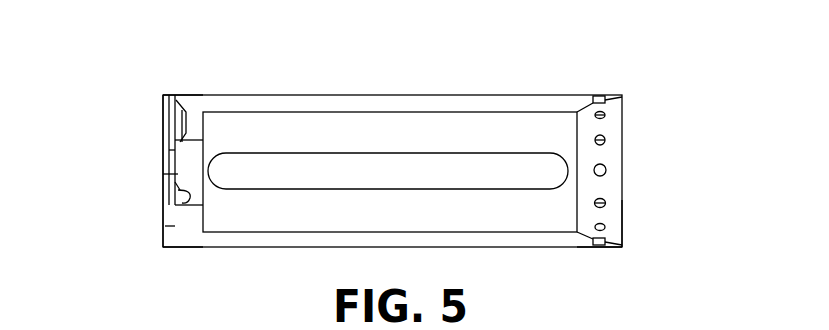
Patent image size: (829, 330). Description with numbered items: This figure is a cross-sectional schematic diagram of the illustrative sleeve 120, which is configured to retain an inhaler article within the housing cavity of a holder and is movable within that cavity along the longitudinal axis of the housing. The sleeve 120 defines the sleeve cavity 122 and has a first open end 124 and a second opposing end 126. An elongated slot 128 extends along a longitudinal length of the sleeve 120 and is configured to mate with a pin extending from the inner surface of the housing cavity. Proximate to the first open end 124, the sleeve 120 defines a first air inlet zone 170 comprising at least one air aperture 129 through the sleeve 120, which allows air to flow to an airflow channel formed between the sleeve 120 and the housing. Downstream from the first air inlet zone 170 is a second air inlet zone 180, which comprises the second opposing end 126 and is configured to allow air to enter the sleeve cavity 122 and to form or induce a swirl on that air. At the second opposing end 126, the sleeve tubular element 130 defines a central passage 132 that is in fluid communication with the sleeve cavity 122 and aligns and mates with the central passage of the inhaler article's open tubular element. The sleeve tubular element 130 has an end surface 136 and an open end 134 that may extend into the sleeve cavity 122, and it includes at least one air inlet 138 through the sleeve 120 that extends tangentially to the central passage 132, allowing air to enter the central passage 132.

The sleeve 120 is at (385, 156).
The sleeve cavity 122 is at (390, 172).
The first open end 124 is at (645, 163).
The second opposing end 126 is at (145, 184).
The elongated slot 128 is at (388, 107).
The air aperture 129 is at (654, 186).
The sleeve tubular element 130 is at (125, 160).
The central passage 132 is at (128, 201).
The open end 134 is at (226, 124).
The end surface 136 is at (134, 129).
The air inlet 138 is at (132, 142).
The first air inlet zone 170 is at (652, 250).
The second air inlet zone 180 is at (172, 129).